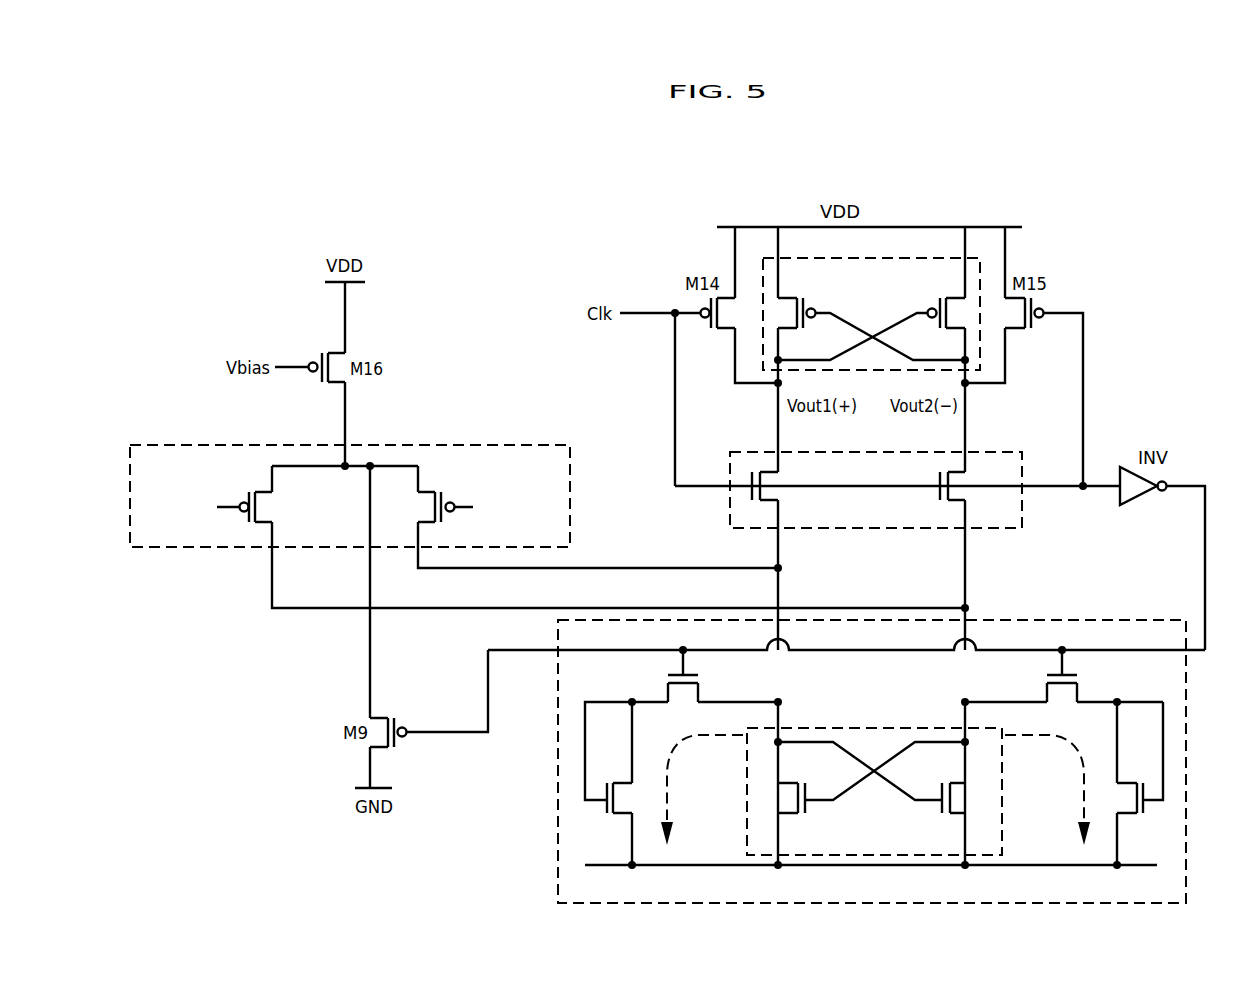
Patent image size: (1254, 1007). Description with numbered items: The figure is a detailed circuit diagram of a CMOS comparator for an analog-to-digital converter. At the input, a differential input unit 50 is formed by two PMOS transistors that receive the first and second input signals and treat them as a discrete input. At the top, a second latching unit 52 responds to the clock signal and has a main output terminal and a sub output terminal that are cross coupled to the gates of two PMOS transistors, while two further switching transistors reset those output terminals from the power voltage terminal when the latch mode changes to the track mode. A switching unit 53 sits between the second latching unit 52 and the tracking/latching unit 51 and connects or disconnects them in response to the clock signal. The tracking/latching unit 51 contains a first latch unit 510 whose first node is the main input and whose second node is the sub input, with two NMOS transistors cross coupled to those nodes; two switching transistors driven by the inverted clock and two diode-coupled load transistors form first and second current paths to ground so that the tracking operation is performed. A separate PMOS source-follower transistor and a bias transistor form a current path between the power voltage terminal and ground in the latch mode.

The differential input unit 50 is at (512, 446).
The tracking/latching unit 51 is at (1093, 620).
The second latching unit 52 is at (907, 258).
The switching unit 53 is at (985, 452).
The first latch unit 510 is at (850, 730).